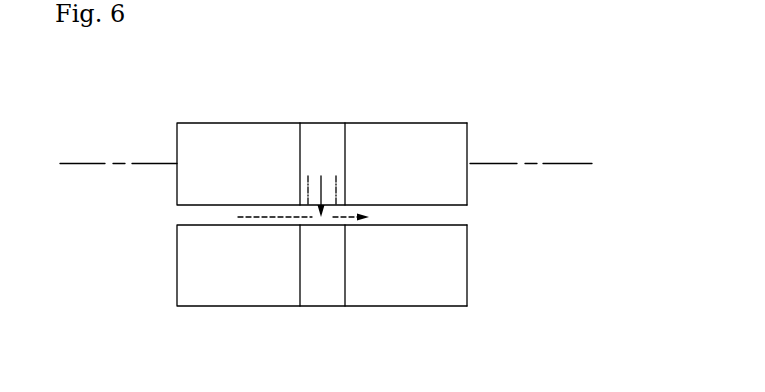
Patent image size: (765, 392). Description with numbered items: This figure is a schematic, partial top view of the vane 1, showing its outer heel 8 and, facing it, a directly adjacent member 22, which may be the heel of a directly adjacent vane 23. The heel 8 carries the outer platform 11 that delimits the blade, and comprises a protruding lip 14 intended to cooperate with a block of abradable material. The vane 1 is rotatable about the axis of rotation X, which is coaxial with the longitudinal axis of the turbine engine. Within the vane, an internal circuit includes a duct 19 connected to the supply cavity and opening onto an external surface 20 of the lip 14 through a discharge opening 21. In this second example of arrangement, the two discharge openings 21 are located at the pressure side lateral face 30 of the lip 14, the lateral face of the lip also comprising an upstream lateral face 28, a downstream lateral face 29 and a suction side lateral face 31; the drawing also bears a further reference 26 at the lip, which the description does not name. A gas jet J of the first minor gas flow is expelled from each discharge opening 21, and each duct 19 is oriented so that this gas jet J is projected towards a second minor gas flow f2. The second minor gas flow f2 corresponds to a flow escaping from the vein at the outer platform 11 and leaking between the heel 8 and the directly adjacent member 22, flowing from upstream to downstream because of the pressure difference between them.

The vane 1 is at (505, 132).
The outer heel 8 is at (480, 113).
The outer platform 11 is at (193, 184).
The protruding lip 14 is at (357, 126).
The duct 19 is at (329, 190).
The external surface 20 is at (356, 167).
The discharge opening 21 is at (316, 176).
The directly adjacent member 22 is at (472, 269).
The directly adjacent vane 23 is at (490, 241).
The groove 26 is at (328, 150).
The upstream lateral face 28 is at (300, 163).
The downstream lateral face 29 is at (345, 151).
The pressure side lateral face 30 is at (346, 204).
The suction side lateral face 31 is at (319, 123).
The second minor gas flow f2 is at (242, 224).
The gas jet J is at (345, 177).
The axis of rotation X is at (565, 164).